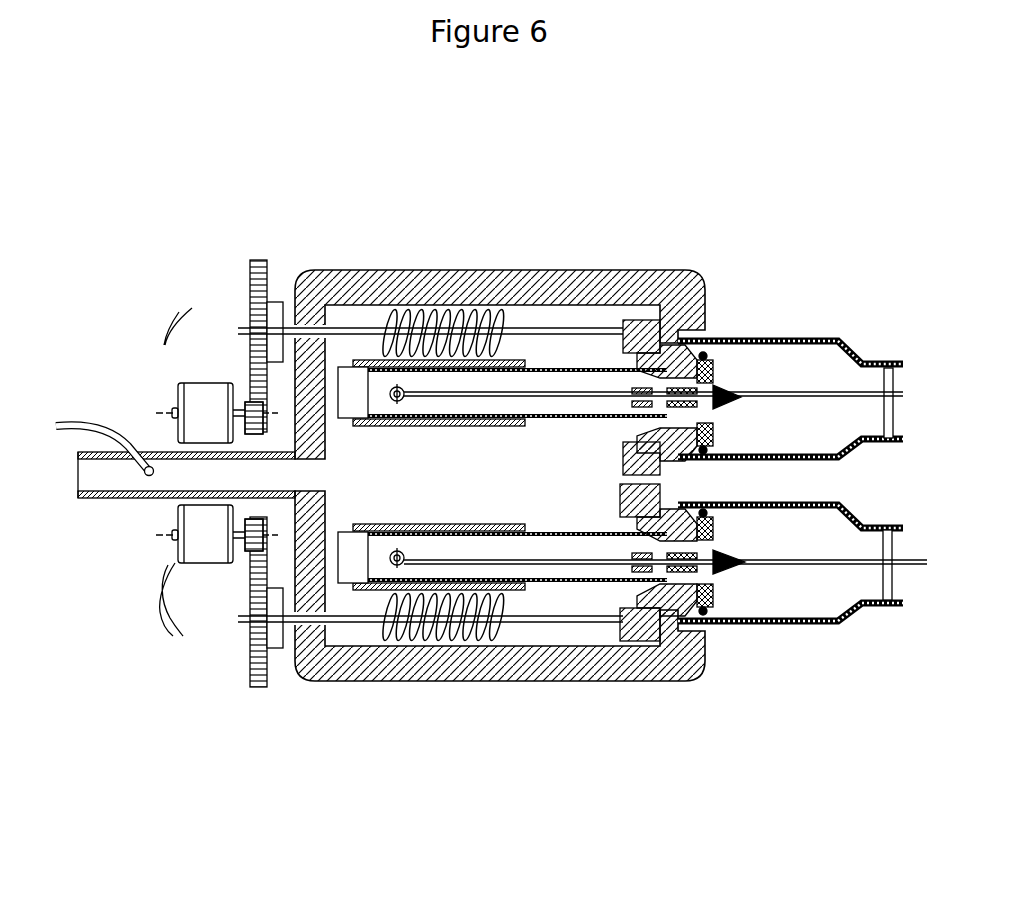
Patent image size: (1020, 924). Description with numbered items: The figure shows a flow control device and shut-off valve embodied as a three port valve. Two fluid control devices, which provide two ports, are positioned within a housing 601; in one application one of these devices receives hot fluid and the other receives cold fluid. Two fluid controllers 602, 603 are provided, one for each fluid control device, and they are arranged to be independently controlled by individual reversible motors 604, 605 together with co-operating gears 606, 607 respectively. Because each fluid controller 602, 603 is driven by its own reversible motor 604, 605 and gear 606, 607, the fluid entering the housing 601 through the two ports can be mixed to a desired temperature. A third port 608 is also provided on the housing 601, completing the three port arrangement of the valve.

The housing 601 is at (515, 681).
The fluid controller 602 is at (603, 568).
The fluid controller 603 is at (605, 378).
The reversible motor 604 is at (197, 563).
The reversible motor 605 is at (176, 384).
The co-operating gear 606 is at (268, 648).
The co-operating gear 607 is at (267, 279).
The third port 608 is at (97, 472).